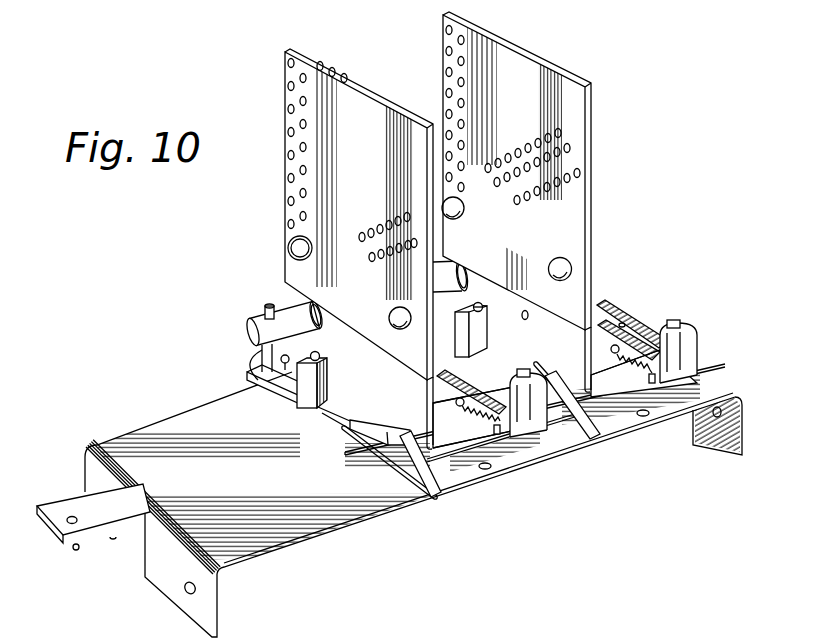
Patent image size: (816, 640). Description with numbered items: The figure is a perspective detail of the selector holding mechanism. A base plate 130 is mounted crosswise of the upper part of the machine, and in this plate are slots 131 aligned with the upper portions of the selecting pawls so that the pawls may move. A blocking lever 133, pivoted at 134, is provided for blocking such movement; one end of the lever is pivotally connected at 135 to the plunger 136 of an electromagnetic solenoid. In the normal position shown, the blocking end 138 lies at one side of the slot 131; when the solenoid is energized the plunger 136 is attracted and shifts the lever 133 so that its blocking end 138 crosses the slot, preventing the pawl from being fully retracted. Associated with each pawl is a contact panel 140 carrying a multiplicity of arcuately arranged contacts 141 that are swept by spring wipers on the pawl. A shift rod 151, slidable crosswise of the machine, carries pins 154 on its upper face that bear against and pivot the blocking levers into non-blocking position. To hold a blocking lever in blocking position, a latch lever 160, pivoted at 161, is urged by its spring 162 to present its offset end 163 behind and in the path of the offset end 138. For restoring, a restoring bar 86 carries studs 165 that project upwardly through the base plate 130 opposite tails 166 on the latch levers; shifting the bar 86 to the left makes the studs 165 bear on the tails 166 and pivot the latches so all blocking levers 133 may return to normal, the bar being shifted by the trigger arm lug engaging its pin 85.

The pin 85 is at (77, 552).
The restoring bar 86 is at (128, 508).
The base plate 130 is at (177, 427).
The slots 131 is at (370, 459).
The blocking lever 133 is at (292, 378).
The pivot 134 is at (255, 366).
The pivotal connection 135 is at (263, 316).
The plunger 136 is at (290, 308).
The blocking end 138 is at (388, 430).
The contact panel 140 is at (380, 154).
The contacts 141 is at (382, 217).
The shift rod 151 is at (310, 360).
The pins 154 is at (447, 307).
The latch lever 160 is at (460, 445).
The pivot 161 is at (512, 416).
The spring 162 is at (674, 430).
The offset end 163 is at (408, 452).
The studs 165 is at (505, 351).
The tails 166 is at (450, 361).